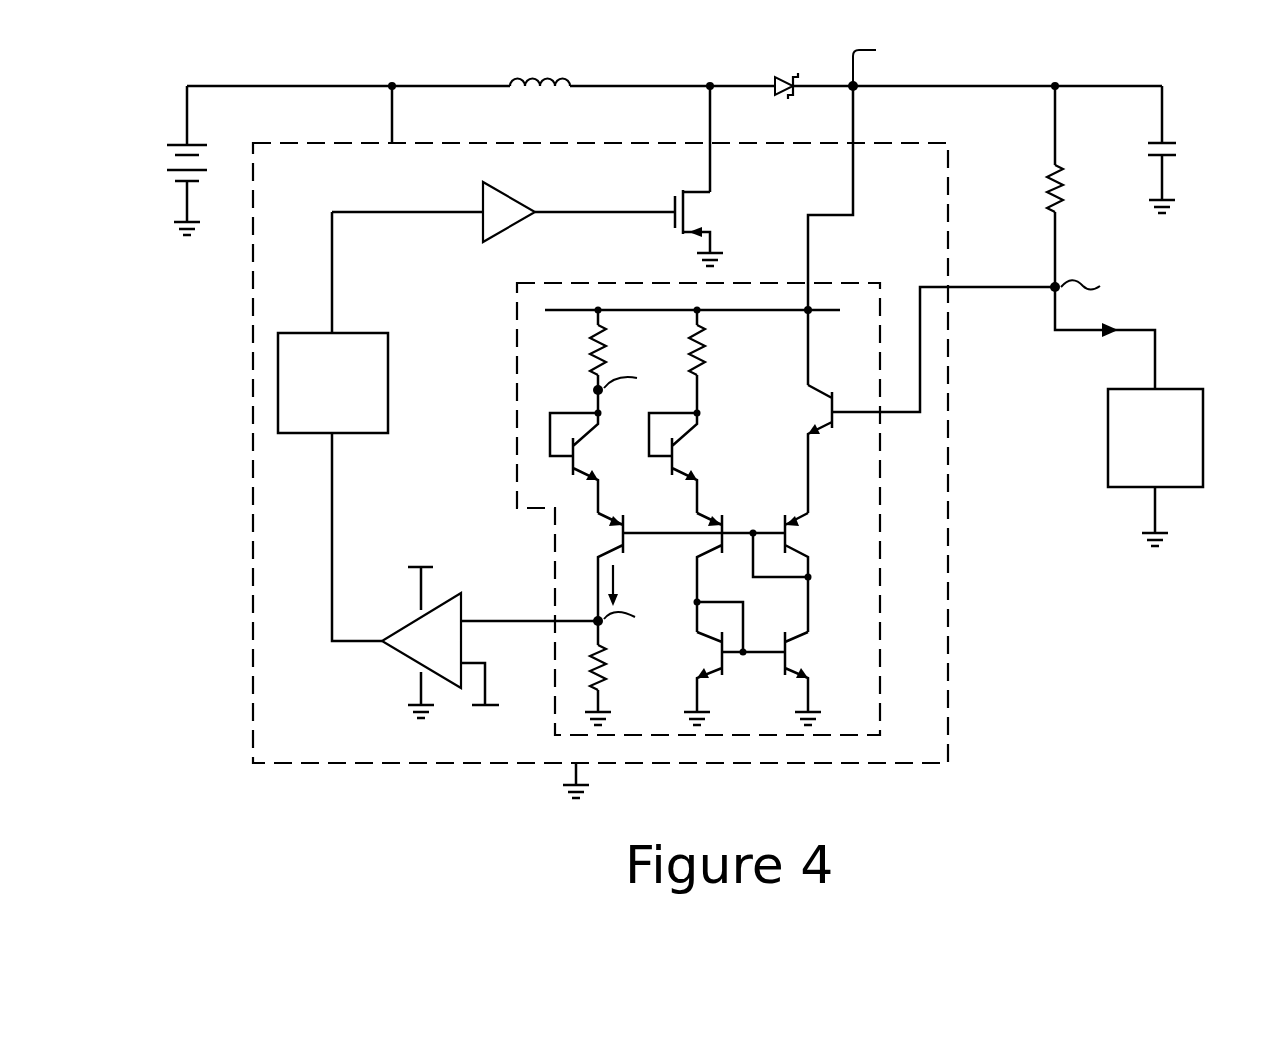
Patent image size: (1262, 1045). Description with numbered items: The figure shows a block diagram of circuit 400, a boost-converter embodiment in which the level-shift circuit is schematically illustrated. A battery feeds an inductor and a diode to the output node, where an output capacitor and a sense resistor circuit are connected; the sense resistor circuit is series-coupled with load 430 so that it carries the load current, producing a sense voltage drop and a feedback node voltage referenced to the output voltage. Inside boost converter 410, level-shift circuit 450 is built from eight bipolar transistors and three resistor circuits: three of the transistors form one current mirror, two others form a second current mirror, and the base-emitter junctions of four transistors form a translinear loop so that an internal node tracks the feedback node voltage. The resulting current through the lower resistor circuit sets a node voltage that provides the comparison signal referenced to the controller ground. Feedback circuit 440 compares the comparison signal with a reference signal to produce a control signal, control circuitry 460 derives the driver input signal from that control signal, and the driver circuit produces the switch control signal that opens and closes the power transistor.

The circuit 400 is at (648, 34).
The boost converter 410 is at (948, 665).
The load 430 is at (1173, 467).
The feedback circuit 440 is at (400, 657).
The level-shift circuit 450 is at (881, 621).
The control circuitry 460 is at (388, 366).